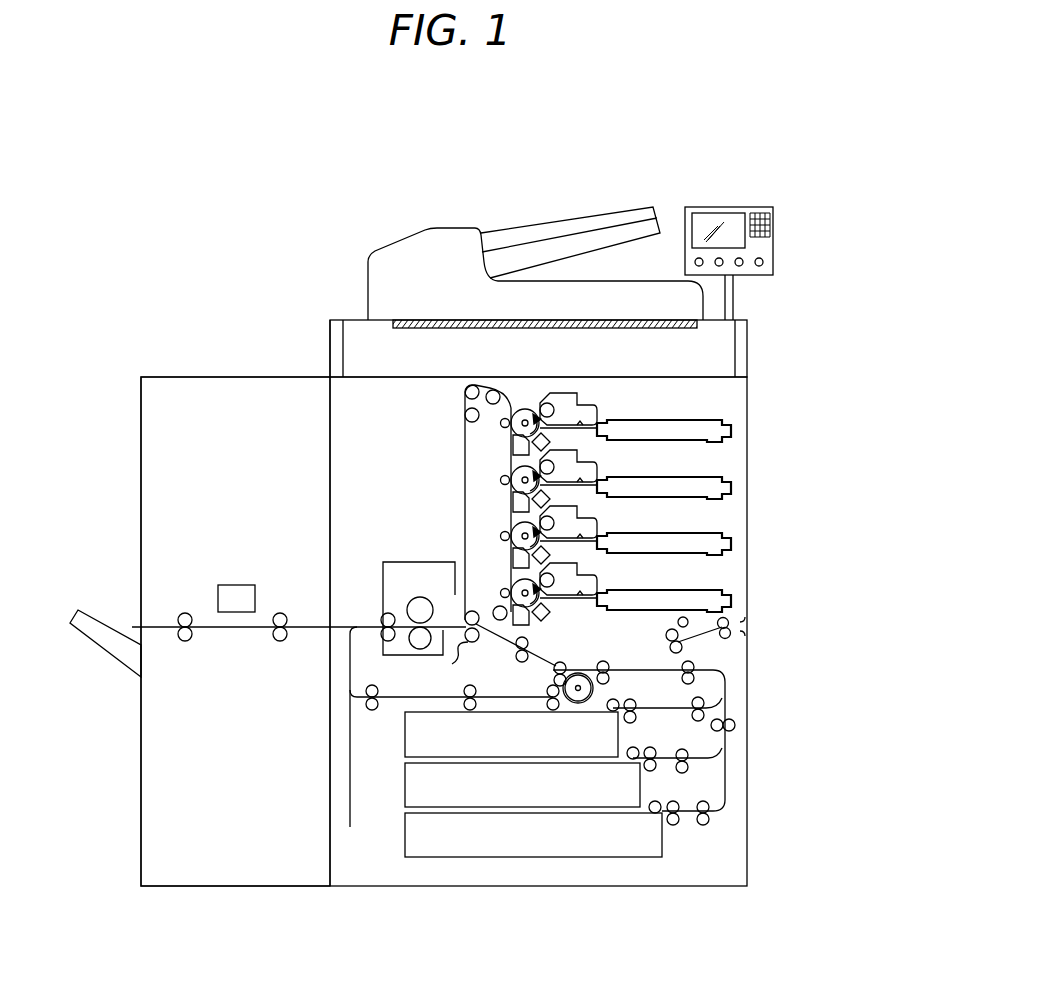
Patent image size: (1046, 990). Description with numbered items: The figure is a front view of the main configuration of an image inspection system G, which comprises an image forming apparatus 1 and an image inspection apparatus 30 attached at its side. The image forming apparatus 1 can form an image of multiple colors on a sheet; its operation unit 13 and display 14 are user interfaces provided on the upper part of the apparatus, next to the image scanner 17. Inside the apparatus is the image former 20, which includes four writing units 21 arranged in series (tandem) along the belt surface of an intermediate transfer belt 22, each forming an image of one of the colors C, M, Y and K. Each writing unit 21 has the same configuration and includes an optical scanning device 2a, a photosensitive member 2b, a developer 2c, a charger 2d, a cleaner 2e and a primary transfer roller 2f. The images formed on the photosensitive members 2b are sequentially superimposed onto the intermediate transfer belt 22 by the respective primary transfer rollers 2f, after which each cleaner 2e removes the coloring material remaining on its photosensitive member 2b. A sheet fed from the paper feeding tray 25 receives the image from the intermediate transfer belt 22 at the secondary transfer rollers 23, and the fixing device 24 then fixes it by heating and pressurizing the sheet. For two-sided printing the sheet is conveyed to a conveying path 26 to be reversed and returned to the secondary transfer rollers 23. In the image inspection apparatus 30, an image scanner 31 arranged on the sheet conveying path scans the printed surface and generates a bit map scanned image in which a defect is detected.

The image inspection system G is at (673, 121).
The image forming apparatus 1 is at (404, 886).
The optical scanning device 2a is at (668, 425).
The photosensitive member 2b is at (525, 407).
The developer 2c is at (597, 412).
The charger 2d is at (555, 433).
The cleaner 2e is at (510, 462).
The primary transfer roller 2f is at (508, 445).
The operation unit 13 is at (754, 241).
The display 14 is at (712, 222).
The image scanner 17 is at (360, 327).
The image former 20 is at (376, 455).
The writing unit 21 is at (614, 482).
The intermediate transfer belt 22 is at (464, 421).
The secondary transfer rollers 23 is at (448, 654).
The fixing device 24 is at (406, 562).
The paper feeding tray 25 is at (480, 866).
The conveying path 26 is at (362, 771).
The image inspection apparatus 30 is at (228, 886).
The image scanner 31 is at (236, 590).